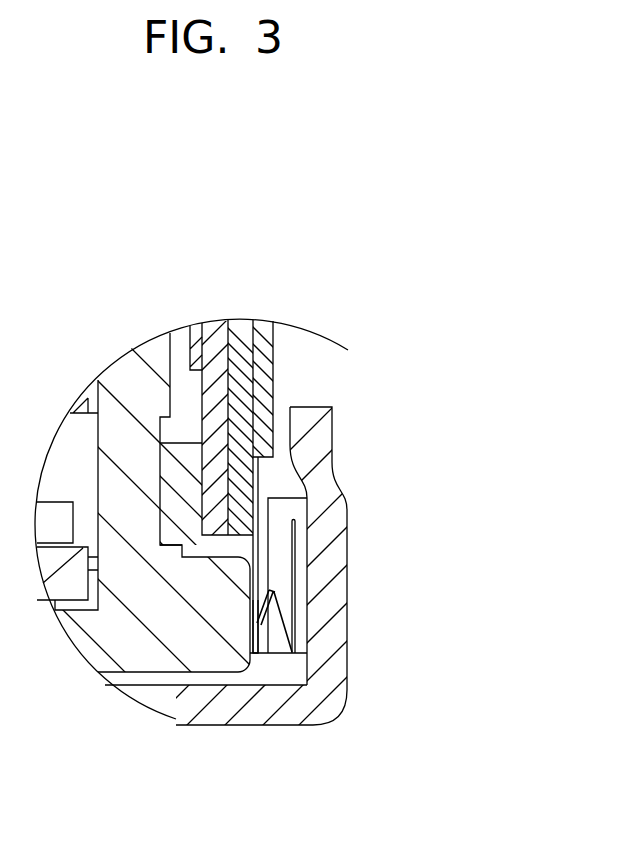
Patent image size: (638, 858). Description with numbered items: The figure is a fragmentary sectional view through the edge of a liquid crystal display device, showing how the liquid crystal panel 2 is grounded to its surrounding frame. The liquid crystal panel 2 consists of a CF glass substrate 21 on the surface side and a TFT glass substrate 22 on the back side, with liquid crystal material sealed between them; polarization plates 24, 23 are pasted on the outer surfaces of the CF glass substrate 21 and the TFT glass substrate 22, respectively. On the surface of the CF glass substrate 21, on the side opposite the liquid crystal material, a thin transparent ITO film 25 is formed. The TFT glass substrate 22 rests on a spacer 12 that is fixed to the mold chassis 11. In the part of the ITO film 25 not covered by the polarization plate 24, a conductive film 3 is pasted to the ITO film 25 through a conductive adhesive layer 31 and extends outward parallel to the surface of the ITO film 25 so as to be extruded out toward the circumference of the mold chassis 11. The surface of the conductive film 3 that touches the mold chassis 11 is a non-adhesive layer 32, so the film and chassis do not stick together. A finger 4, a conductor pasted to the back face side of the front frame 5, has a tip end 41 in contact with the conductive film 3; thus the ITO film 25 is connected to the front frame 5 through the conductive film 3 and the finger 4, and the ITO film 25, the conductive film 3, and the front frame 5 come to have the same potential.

The liquid crystal panel 2 is at (238, 381).
The CF glass substrate 21 is at (240, 324).
The TFT glass substrate 22 is at (217, 324).
The polarization plate 23 is at (163, 307).
The polarization plate 24 is at (276, 347).
The ITO film 25 is at (256, 493).
The conductive film 3 is at (317, 629).
The conductive adhesive layer 31 is at (296, 518).
The non-adhesive layer 32 is at (250, 626).
The finger 4 is at (283, 577).
The tip end 41 is at (280, 628).
The front frame 5 is at (347, 688).
The mold chassis 11 is at (232, 690).
The spacer 12 is at (173, 540).